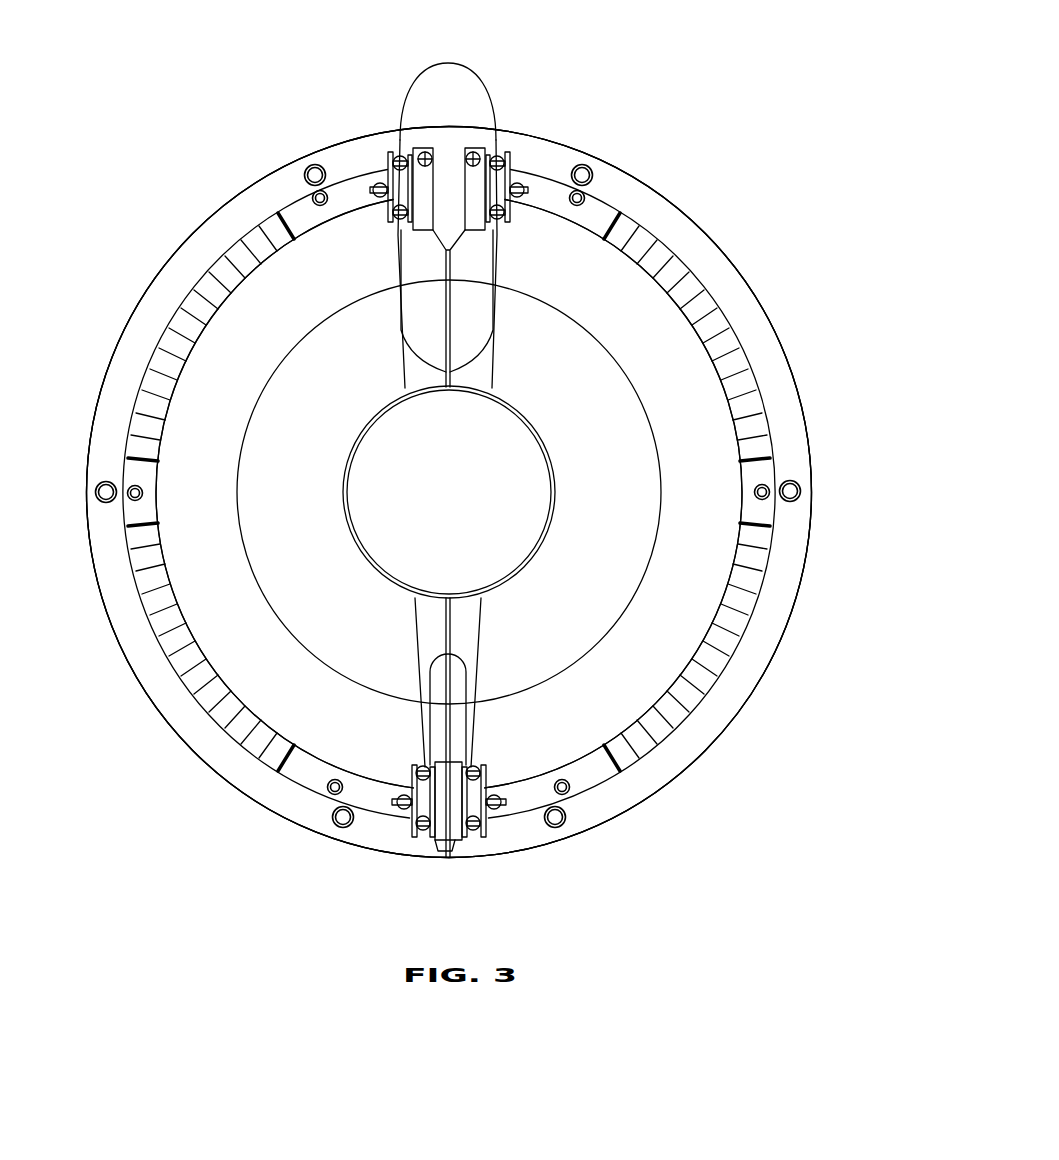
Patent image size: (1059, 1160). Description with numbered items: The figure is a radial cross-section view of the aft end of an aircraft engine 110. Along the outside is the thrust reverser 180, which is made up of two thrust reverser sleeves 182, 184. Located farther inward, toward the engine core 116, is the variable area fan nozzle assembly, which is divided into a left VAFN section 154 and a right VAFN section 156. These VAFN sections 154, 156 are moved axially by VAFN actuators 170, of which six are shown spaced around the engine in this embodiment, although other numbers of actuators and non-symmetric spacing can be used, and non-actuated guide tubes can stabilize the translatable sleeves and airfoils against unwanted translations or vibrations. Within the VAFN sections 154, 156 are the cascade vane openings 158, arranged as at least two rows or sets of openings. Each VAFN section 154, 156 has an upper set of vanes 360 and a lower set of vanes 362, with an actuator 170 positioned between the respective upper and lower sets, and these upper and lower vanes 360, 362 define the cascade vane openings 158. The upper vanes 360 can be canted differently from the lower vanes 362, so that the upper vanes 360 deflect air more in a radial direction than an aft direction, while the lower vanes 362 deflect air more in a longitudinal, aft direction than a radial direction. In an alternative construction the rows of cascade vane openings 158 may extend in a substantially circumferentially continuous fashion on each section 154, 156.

The aircraft engine 110 is at (669, 72).
The engine core 116 is at (240, 472).
The VAFN section 154 is at (194, 405).
The VAFN section 156 is at (710, 406).
The cascade vane openings 158 is at (213, 319).
The VAFN actuators 170 is at (311, 202).
The thrust reverser 180 is at (189, 778).
The thrust reverser sleeve 182 is at (202, 234).
The thrust reverser sleeve 184 is at (697, 236).
The upper set of vanes 360 is at (158, 450).
The lower set of vanes 362 is at (160, 529).